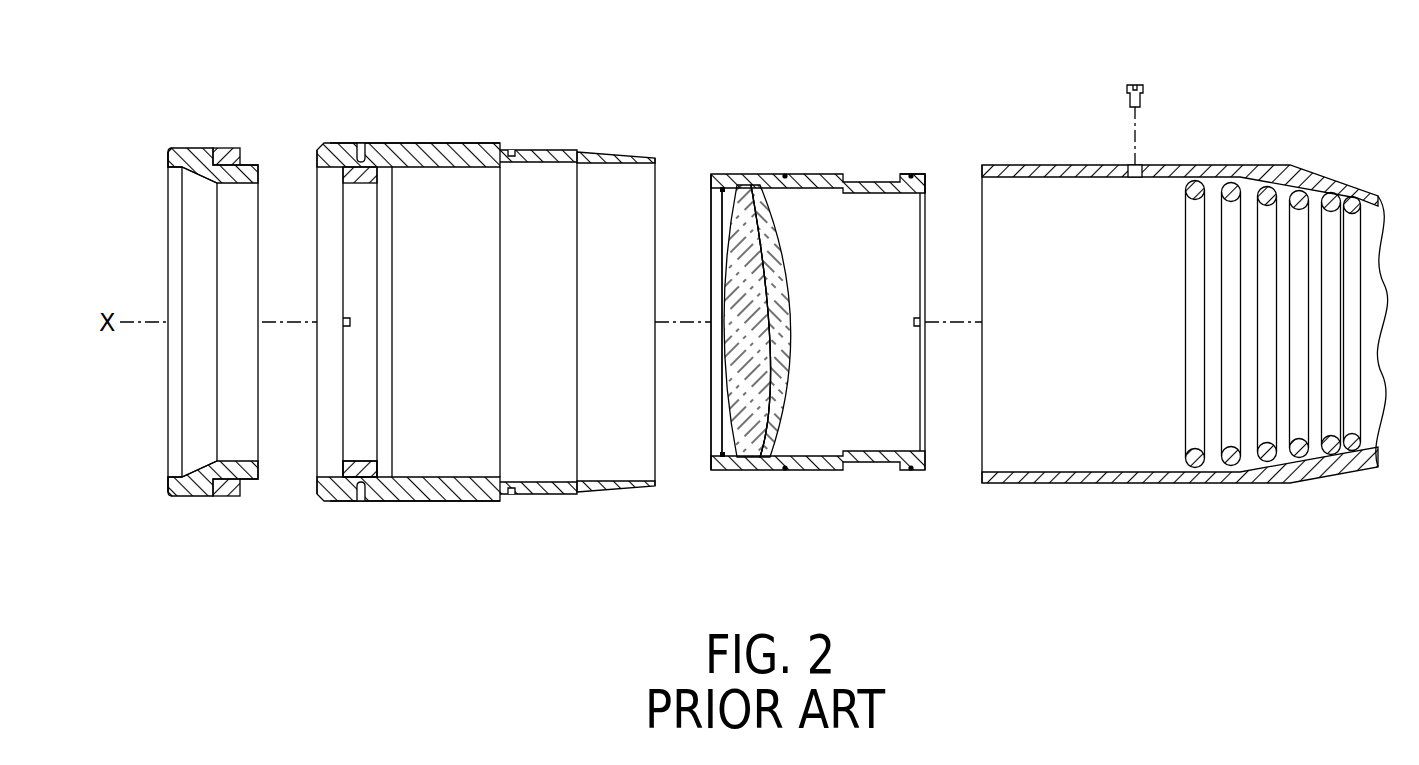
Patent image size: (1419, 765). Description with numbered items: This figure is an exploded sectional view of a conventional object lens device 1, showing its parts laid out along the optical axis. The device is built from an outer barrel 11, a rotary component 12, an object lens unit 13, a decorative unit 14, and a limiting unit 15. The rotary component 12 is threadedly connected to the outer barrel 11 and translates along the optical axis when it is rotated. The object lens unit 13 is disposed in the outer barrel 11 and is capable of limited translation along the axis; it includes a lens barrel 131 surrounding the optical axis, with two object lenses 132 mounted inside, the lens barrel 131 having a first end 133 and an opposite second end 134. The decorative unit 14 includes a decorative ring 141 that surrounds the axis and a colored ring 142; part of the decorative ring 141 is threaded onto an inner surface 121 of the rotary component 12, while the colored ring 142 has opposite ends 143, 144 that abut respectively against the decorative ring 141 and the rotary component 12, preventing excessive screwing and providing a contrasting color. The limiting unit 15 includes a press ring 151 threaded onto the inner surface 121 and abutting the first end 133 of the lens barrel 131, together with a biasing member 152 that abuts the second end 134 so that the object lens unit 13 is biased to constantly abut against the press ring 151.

The object lens device 1 is at (875, 96).
The outer barrel 11 is at (1125, 490).
The rotary component 12 is at (428, 136).
The inner surface 121 is at (398, 143).
The object lens unit 13 is at (805, 480).
The lens barrel 131 is at (765, 174).
The object lenses 132 is at (772, 432).
The first end 133 is at (711, 204).
The second end 134 is at (925, 204).
The decorative unit 14 is at (200, 140).
The decorative ring 141 is at (171, 496).
The colored ring 142 is at (222, 496).
The end of colored ring 143 is at (212, 497).
The end of colored ring 144 is at (241, 496).
The limiting unit 15 is at (336, 467).
The press ring 151 is at (354, 477).
The biasing member 152 is at (1265, 188).